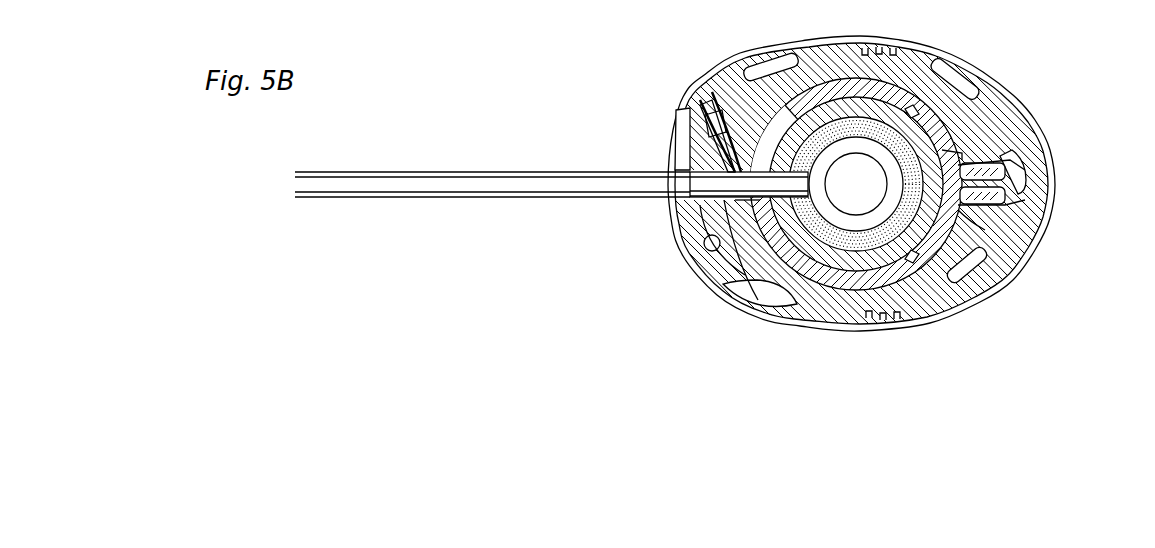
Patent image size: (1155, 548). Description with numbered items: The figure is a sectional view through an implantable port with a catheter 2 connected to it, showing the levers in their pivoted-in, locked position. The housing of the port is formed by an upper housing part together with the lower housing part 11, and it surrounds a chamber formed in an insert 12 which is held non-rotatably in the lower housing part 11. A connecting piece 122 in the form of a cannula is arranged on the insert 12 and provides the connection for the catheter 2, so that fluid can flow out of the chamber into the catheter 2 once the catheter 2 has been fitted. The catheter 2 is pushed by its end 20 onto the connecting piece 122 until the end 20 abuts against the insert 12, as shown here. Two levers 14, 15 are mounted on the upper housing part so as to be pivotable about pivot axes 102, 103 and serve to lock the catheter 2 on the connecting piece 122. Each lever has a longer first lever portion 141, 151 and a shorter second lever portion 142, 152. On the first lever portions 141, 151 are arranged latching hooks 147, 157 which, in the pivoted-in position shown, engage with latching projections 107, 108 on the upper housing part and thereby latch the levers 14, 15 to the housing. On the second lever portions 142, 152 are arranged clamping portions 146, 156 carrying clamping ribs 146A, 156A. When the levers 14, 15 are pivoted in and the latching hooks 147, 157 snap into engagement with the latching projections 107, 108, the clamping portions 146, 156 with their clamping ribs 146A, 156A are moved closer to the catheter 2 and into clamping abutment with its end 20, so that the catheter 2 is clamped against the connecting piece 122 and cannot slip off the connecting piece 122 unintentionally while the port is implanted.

The catheter 2 is at (553, 190).
The lower housing part 11 is at (913, 242).
The insert 12 is at (857, 242).
The lever 14 is at (951, 272).
The lever 15 is at (980, 134).
The end of the catheter 20 is at (748, 200).
The pivot axis 102 is at (735, 205).
The pivot axis 103 is at (712, 126).
The latching projection 107 is at (960, 213).
The latching projection 108 is at (967, 153).
The connecting piece 122 is at (773, 200).
The first lever portion 141 is at (978, 250).
The second lever portion 142 is at (708, 247).
The clamping portion 146 is at (731, 205).
The clamping ribs 146A is at (745, 198).
The latching hook 147 is at (963, 213).
The first lever portion 151 is at (973, 143).
The second lever portion 152 is at (700, 153).
The clamping portion 156 is at (738, 168).
The clamping ribs 156A is at (733, 172).
The latching hook 157 is at (975, 166).